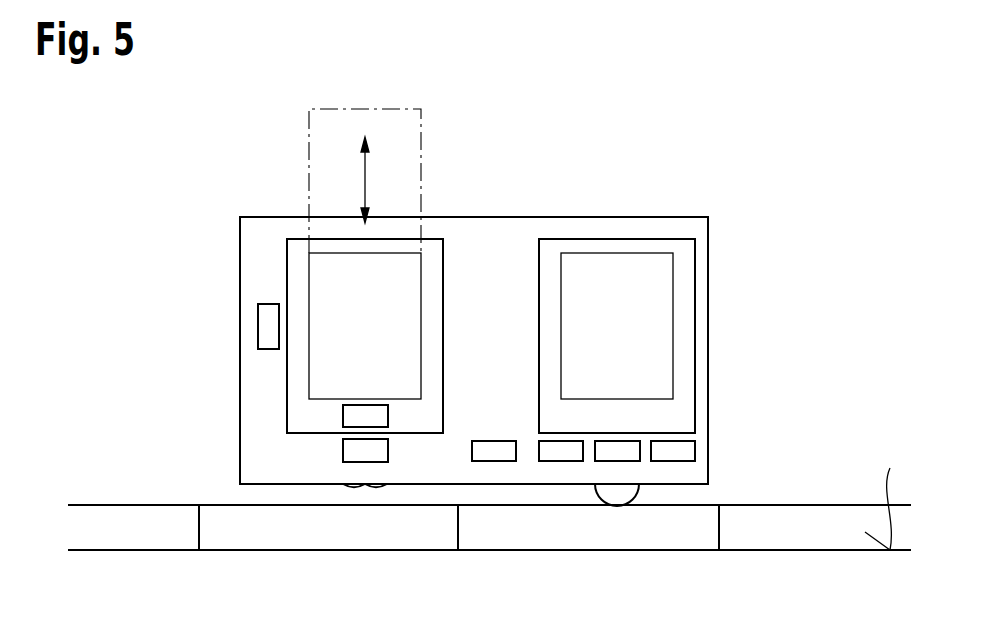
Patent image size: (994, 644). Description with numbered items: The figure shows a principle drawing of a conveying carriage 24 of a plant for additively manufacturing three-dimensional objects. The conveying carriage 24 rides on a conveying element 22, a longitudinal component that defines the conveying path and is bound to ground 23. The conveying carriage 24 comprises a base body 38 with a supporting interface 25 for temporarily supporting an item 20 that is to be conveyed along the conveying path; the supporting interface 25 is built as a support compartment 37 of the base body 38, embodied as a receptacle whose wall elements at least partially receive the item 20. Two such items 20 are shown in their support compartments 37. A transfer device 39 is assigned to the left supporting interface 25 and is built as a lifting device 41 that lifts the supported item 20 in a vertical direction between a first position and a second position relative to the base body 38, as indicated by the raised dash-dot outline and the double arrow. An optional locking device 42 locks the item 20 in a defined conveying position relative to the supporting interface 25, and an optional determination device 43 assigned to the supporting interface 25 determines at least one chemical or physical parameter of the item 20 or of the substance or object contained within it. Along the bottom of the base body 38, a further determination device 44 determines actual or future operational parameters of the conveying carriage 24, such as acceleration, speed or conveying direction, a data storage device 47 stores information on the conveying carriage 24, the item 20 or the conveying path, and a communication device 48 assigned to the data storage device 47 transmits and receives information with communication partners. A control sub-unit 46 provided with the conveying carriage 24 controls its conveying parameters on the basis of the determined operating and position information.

The item 20 is at (443, 328).
The conveying element 22 is at (826, 505).
The ground 23 is at (884, 492).
The conveying carriage 24 is at (498, 217).
The supporting interface 25 is at (431, 286).
The support compartment 37 is at (287, 251).
The base body 38 is at (525, 247).
The transfer device 39 is at (216, 326).
The lifting device 41 is at (258, 325).
The locking device 42 is at (343, 413).
The determination device 43 is at (343, 451).
The further determination device 44 is at (493, 461).
The control sub-unit 46 is at (695, 452).
The data storage device 47 is at (560, 461).
The communication device 48 is at (617, 461).